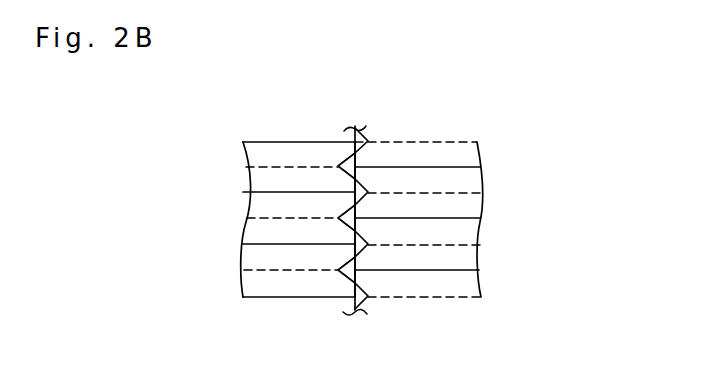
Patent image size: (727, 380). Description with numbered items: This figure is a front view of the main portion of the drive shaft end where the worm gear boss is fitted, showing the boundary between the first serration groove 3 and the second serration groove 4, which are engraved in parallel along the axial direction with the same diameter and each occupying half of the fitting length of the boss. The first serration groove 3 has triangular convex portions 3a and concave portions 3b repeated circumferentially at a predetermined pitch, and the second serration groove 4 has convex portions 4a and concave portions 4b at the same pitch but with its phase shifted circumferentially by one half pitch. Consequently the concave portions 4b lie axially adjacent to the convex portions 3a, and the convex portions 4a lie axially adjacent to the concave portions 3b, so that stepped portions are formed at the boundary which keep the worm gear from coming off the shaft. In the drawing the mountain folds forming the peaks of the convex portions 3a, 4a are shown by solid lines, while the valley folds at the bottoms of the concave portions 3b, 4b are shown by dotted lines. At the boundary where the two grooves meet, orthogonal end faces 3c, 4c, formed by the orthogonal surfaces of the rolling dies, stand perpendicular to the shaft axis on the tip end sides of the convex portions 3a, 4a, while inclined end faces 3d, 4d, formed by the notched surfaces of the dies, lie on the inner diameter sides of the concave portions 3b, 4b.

The first serration groove 3 is at (465, 313).
The convex portions 3a is at (450, 160).
The concave portions 3b is at (403, 198).
The orthogonal end face 3c is at (356, 163).
The inclined end face 3d is at (356, 152).
The second serration groove 4 is at (300, 307).
The convex portions 4a is at (287, 192).
The concave portions 4b is at (300, 218).
The orthogonal end face 4c is at (354, 127).
The inclined end face 4d is at (340, 166).